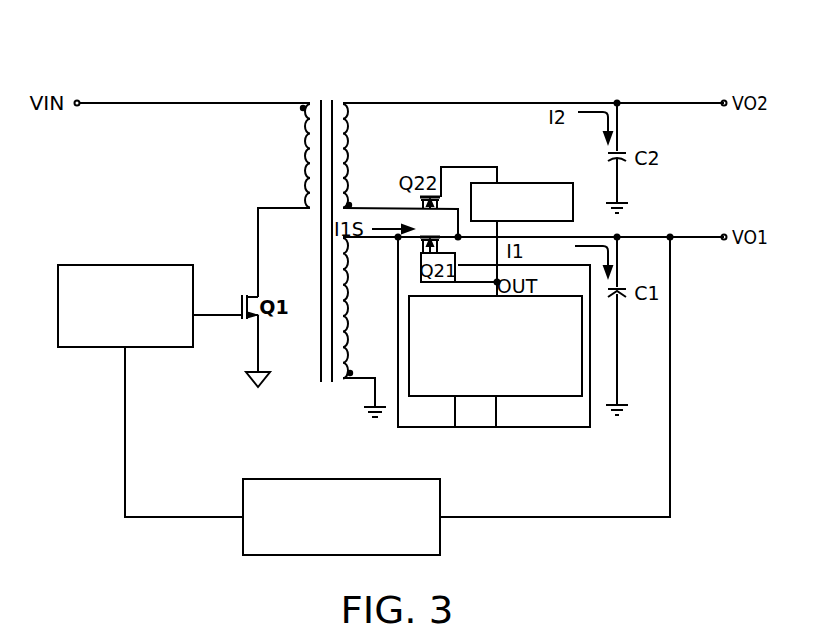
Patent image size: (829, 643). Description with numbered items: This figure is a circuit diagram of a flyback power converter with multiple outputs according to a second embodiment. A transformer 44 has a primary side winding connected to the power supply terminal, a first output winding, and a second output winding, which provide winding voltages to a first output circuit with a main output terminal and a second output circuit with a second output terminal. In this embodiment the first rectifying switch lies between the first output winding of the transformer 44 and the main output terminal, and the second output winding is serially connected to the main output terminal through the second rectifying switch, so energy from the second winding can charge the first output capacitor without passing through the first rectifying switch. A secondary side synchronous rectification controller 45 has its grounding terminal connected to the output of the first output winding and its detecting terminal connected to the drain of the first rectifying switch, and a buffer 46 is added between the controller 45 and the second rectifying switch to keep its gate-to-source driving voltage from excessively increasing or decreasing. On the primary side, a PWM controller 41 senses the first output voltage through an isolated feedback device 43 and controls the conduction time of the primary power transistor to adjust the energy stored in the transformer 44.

The PWM controller 41 is at (125, 265).
The isolated feedback device 43 is at (313, 479).
The transformer 44 is at (326, 90).
The secondary side synchronous rectification controller 45 is at (478, 397).
The buffer 46 is at (563, 183).